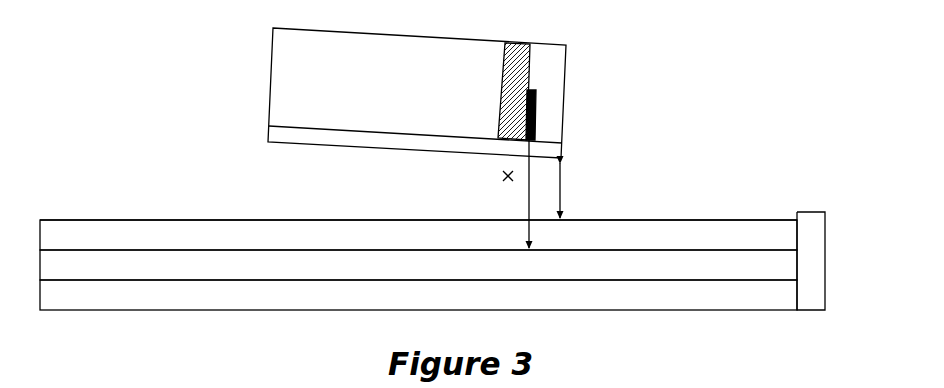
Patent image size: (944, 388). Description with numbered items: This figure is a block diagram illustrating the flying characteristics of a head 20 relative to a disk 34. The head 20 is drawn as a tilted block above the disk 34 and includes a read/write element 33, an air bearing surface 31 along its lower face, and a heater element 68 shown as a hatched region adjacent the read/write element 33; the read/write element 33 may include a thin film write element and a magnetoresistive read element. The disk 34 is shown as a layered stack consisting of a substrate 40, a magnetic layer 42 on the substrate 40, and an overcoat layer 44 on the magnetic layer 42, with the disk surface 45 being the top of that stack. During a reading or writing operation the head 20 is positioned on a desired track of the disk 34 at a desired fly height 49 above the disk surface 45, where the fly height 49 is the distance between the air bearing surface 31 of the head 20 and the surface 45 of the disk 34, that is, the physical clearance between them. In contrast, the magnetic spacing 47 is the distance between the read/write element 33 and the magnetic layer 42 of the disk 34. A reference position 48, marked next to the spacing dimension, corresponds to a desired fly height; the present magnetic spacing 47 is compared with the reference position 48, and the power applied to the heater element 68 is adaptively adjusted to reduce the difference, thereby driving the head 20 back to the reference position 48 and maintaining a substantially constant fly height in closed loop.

The head 20 is at (417, 93).
The air bearing surface 31 is at (268, 133).
The heater element 68 is at (530, 70).
The read/write element 33 is at (536, 100).
The disk surface 45 is at (240, 218).
The reference position 48 is at (501, 174).
The magnetic spacing 47 is at (527, 203).
The fly height 49 is at (563, 187).
The overcoat layer 44 is at (418, 235).
The magnetic layer 42 is at (418, 265).
The substrate 40 is at (418, 295).
The disk 34 is at (825, 258).